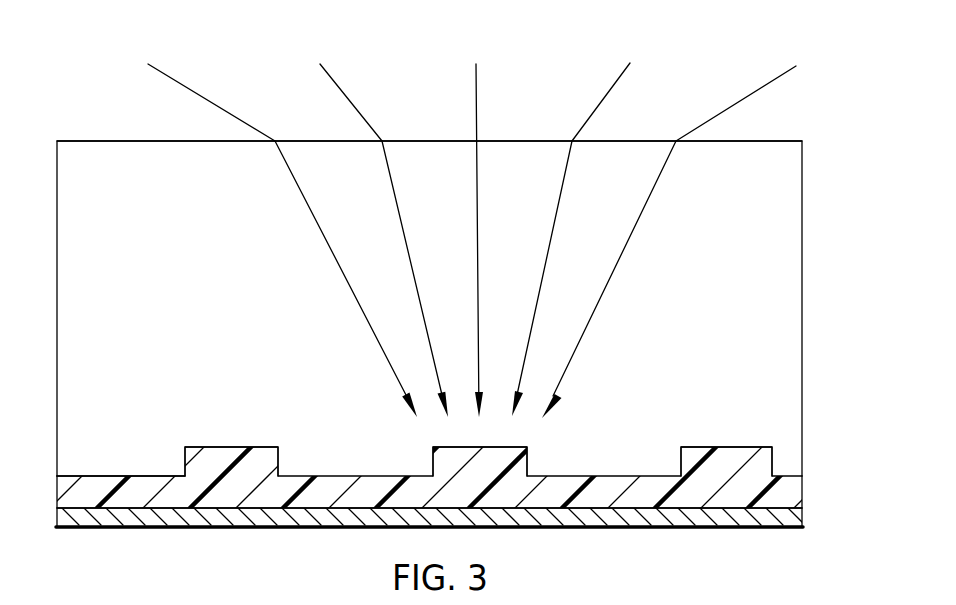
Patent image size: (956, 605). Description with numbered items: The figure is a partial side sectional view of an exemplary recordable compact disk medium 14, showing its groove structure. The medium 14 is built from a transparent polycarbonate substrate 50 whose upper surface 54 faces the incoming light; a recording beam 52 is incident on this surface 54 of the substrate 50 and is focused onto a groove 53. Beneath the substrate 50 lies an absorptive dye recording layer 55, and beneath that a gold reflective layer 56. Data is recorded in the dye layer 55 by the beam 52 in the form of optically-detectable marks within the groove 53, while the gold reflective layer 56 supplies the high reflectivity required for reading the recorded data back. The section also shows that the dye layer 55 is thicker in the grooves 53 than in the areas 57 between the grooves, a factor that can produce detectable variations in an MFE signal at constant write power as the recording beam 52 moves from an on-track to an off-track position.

The CD-R medium 14 is at (78, 107).
The transparent polycarbonate substrate 50 is at (138, 197).
The recording beam 52 is at (630, 305).
The groove 53 is at (230, 446).
The upper surface 54 is at (766, 140).
The absorptive dye recording layer 55 is at (99, 476).
The gold reflective layer 56 is at (105, 517).
The areas between the grooves 57 is at (337, 476).